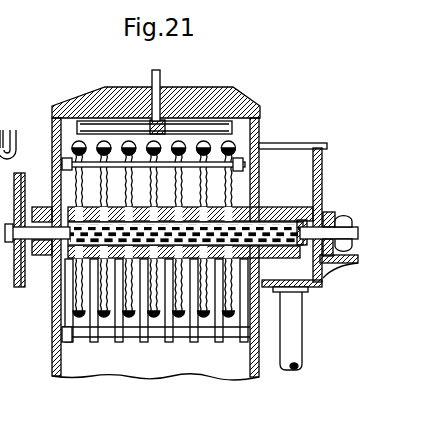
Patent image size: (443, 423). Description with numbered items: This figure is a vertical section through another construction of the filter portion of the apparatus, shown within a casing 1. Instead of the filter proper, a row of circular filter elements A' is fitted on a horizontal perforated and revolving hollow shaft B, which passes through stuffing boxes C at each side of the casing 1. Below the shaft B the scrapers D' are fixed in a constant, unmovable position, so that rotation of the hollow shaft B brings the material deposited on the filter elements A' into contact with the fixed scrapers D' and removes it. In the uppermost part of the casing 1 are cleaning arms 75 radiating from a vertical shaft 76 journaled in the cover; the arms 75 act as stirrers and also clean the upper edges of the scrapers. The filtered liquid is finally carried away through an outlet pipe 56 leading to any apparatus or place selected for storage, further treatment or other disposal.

The housing 1 is at (47, 360).
The hollow shaft B is at (281, 218).
The circular filter elements A' is at (196, 174).
The scrapers D' is at (156, 333).
The cleaning arms 75 is at (218, 125).
The vertical shaft 76 is at (150, 78).
The stuffing boxes C is at (268, 200).
The outlet pipe 56 is at (292, 323).